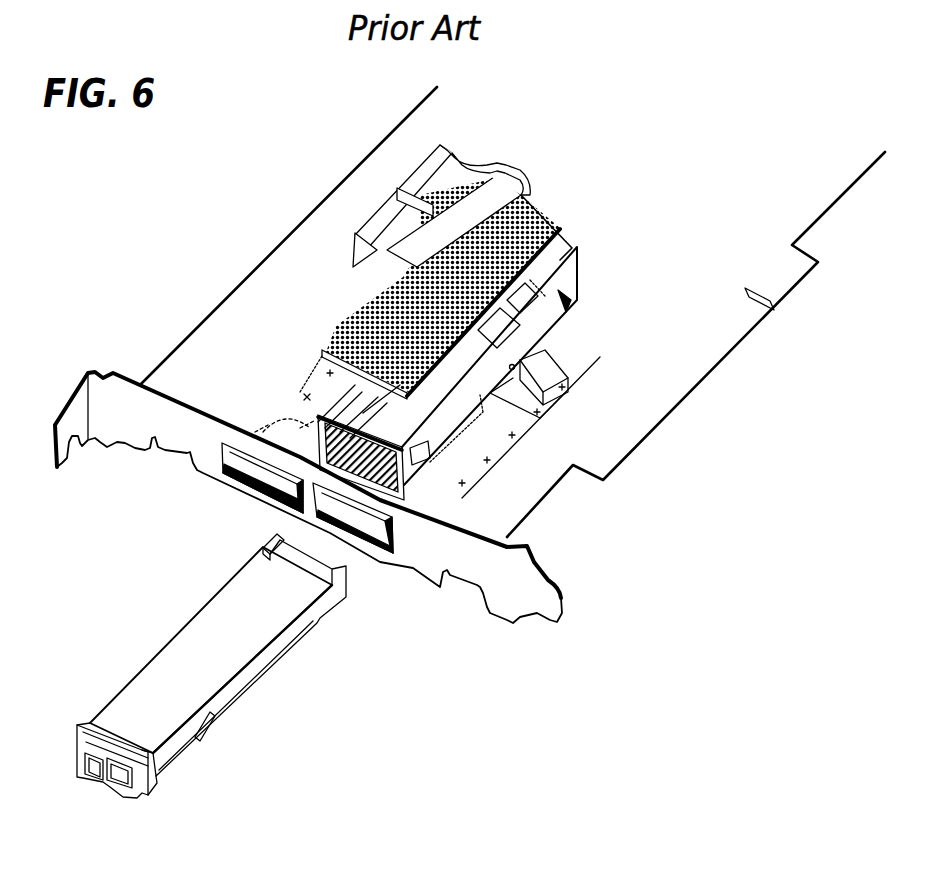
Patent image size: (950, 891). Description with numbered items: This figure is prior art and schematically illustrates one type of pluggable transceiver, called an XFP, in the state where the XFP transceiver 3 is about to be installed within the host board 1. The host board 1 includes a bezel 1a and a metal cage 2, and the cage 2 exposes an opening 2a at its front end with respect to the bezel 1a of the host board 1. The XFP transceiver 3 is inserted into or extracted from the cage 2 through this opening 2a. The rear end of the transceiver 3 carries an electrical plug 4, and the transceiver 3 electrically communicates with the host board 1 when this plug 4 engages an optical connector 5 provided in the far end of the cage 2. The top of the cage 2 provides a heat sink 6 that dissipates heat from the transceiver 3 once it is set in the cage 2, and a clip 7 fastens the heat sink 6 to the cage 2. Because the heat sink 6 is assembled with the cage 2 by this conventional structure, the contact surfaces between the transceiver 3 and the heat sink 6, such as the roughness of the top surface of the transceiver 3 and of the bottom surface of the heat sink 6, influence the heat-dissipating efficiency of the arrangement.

The host board 1 is at (318, 220).
The bezel 1a is at (413, 570).
The metal cage 2 is at (565, 293).
The opening 2a is at (285, 424).
The XFP transceiver 3 is at (160, 645).
The electrical plug 4 is at (263, 548).
The optical connector 5 is at (578, 368).
The heat sink 6 is at (370, 320).
The clip 7 is at (520, 180).